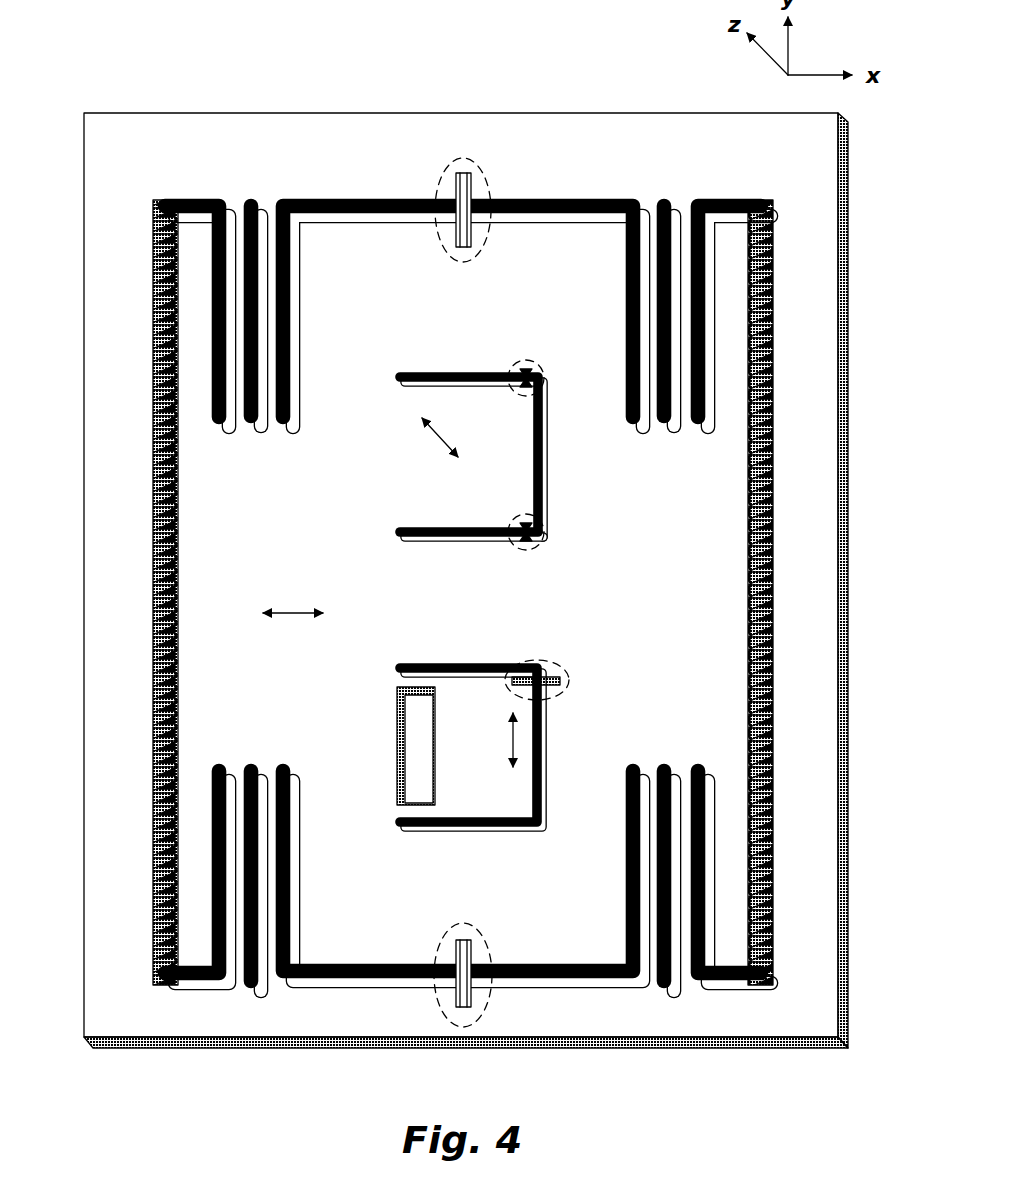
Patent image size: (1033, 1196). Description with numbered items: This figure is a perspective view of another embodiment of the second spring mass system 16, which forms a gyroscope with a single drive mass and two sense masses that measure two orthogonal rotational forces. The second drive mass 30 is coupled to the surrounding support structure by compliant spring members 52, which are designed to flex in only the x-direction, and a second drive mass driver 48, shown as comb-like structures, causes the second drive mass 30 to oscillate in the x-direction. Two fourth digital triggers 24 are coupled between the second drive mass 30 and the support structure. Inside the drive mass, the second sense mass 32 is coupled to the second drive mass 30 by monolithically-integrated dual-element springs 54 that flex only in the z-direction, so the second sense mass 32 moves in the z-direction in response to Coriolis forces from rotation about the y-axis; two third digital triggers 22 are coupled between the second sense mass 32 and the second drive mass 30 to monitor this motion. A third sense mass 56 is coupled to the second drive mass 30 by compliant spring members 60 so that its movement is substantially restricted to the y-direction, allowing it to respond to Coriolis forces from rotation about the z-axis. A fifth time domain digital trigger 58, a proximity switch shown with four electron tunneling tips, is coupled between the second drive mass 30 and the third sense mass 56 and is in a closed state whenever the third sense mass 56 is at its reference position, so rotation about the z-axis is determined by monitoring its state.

The second spring mass system 16 is at (126, 75).
The third trigger 22 is at (527, 360).
The fourth trigger 24 is at (440, 235).
The second drive mass 30 is at (306, 601).
The second sense mass 32 is at (471, 486).
The second drive mass driver 48 is at (178, 500).
The compliant spring members 52 is at (461, 618).
The monolithically-integrated dual-element springs 54 is at (432, 546).
The third sense mass 56 is at (495, 753).
The fifth time domain digital trigger 58 is at (565, 679).
The compliant spring members 60 is at (398, 682).